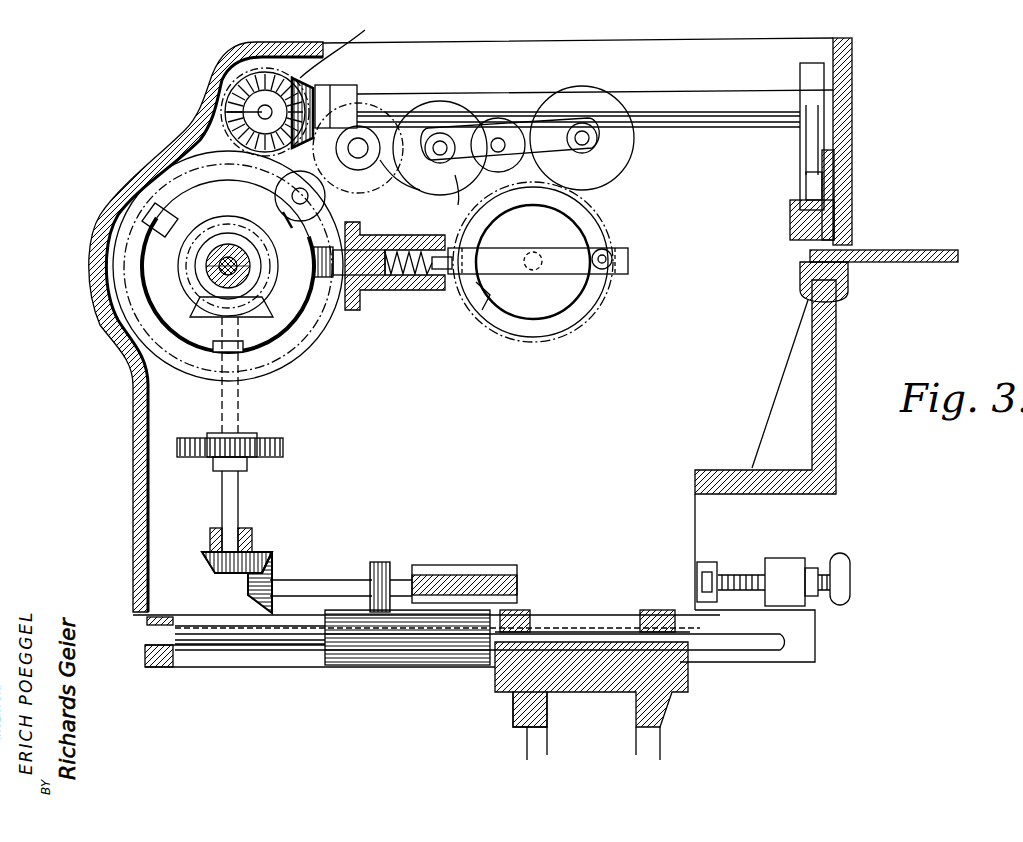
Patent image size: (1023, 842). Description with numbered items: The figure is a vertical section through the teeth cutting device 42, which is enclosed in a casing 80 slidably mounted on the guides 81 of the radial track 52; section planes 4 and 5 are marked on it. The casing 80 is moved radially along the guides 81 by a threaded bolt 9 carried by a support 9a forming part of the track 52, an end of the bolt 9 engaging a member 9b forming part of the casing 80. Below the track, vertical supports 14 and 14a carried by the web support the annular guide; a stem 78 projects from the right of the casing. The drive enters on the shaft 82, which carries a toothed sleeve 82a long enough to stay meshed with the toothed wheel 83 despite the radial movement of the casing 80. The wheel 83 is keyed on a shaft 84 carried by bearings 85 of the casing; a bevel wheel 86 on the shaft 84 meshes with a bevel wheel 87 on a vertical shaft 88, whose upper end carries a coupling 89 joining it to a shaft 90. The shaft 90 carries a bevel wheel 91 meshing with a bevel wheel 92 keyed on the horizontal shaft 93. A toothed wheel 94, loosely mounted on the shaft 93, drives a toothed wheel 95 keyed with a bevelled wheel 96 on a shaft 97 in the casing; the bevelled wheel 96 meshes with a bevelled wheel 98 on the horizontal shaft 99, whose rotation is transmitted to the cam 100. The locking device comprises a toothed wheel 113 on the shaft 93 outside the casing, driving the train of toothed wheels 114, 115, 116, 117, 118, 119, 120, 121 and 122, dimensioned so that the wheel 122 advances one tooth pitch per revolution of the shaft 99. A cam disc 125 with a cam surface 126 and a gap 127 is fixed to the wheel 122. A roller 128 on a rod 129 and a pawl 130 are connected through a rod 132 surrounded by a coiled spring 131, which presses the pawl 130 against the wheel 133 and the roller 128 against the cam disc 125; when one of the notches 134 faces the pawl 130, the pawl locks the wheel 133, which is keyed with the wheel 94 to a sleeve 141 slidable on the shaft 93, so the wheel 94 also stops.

The section line 4- 4 is at (725, 80).
The section line 5- 5 is at (112, 265).
The threaded bolt 9 is at (752, 562).
The support 9a is at (800, 562).
The member 9b is at (712, 565).
The vertical support 14 is at (625, 733).
The vertical support 14a is at (545, 738).
The teeth cutting device 42 is at (838, 380).
The radial track 52 is at (316, 670).
The stem 78 is at (945, 252).
The casing 80 is at (132, 428).
The guides 81 is at (142, 626).
The shaft 82 is at (748, 655).
The toothed sleeve 82a is at (408, 660).
The toothed wheel 83 is at (392, 560).
The shaft 84 is at (322, 580).
The bearings 85 is at (485, 575).
The bevel wheel 86 is at (270, 570).
The bevel wheel 87 is at (210, 560).
The vertical shaft 88 is at (240, 496).
The coupling 89 is at (283, 442).
The shaft 90 is at (238, 393).
The bevel wheel 91 is at (205, 300).
The bevel wheel 92 is at (262, 268).
The horizontal shaft 93 is at (214, 262).
The toothed wheel 94 is at (300, 330).
The toothed wheel 95 is at (342, 45).
The bevelled wheel 96 is at (225, 127).
The shaft 97 is at (235, 106).
The bevelled wheel 98 is at (320, 92).
The horizontal shaft 99 is at (525, 100).
The cam 100 is at (802, 78).
The toothed wheel 113 is at (318, 290).
The toothed wheel 114 is at (340, 212).
The toothed wheel 115 is at (247, 222).
The toothed wheel 116 is at (400, 200).
The toothed wheel 117 is at (368, 130).
The toothed wheel 118 is at (458, 210).
The toothed wheel 119 is at (425, 140).
The toothed wheel 120 is at (495, 125).
The toothed wheel 121 is at (597, 88).
The toothed wheel 122 is at (596, 218).
The cam disc 125 is at (548, 325).
The cam surface 126 is at (590, 300).
The gap 127 is at (482, 312).
The roller 128 is at (608, 276).
The rod 129 is at (580, 252).
The pawl 130 is at (395, 272).
The coiled spring 131 is at (430, 290).
The rod 132 is at (400, 285).
The wheel 133 is at (270, 335).
The notch 134 is at (150, 215).
The sleeve 141 is at (250, 262).